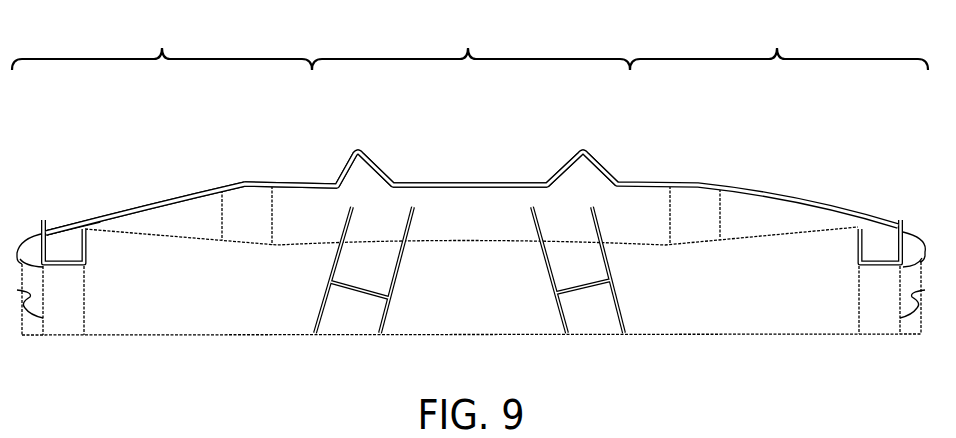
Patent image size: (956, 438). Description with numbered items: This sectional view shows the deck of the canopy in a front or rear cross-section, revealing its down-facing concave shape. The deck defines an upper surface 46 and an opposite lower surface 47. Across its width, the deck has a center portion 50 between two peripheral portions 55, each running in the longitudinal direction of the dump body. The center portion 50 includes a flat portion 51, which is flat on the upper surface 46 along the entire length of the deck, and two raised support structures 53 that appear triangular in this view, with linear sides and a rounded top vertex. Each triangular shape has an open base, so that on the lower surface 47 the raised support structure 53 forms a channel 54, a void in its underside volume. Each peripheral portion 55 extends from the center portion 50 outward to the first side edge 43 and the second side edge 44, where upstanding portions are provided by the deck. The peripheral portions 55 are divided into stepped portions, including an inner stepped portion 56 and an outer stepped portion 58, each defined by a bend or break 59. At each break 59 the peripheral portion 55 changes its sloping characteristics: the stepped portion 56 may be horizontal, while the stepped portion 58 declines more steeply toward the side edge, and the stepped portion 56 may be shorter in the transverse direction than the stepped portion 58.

The first side edge 43 is at (45, 220).
The second side edge 44 is at (901, 221).
The upper surface 46 is at (838, 168).
The lower surface 47 is at (810, 297).
The center portion 50 is at (471, 39).
The flat portion 51 is at (472, 183).
The raised support structure 53 is at (359, 148).
The channel 54 is at (357, 171).
The peripheral portion 55 is at (470, 39).
The stepped portion 56 is at (293, 183).
The stepped portion 58 is at (95, 216).
The bend or break 59 is at (177, 199).